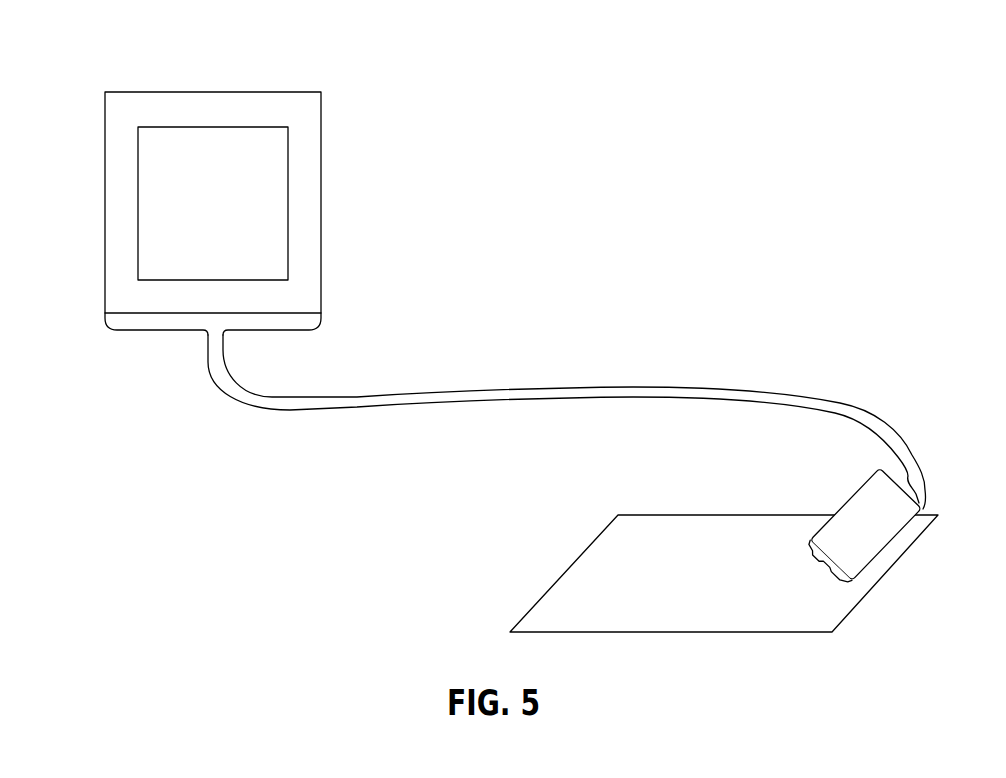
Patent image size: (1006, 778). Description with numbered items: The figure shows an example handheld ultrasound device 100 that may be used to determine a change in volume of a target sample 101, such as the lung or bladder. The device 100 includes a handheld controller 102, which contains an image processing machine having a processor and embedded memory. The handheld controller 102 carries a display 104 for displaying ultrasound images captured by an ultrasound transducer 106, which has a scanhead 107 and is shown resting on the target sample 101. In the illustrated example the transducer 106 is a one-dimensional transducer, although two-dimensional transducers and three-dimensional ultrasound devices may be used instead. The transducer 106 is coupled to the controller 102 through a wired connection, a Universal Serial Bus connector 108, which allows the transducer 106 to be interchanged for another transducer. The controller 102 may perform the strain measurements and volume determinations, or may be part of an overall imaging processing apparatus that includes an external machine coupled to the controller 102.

The handheld ultrasound device 100 is at (407, 56).
The target sample 101 is at (660, 524).
The handheld controller 102 is at (323, 197).
The display 104 is at (228, 249).
The ultrasound transducer 106 is at (903, 530).
The scanhead 107 is at (814, 556).
The Universal Serial Bus (USB) connector 108 is at (492, 388).